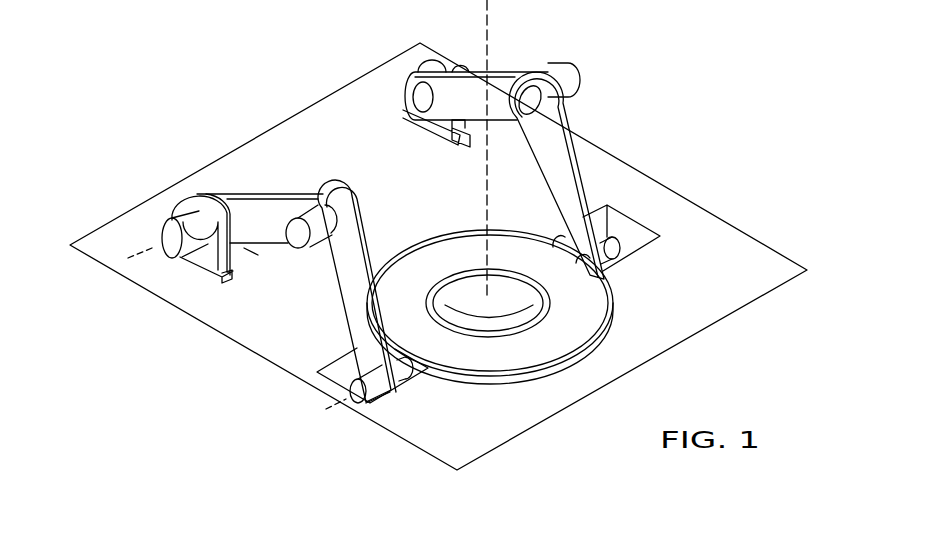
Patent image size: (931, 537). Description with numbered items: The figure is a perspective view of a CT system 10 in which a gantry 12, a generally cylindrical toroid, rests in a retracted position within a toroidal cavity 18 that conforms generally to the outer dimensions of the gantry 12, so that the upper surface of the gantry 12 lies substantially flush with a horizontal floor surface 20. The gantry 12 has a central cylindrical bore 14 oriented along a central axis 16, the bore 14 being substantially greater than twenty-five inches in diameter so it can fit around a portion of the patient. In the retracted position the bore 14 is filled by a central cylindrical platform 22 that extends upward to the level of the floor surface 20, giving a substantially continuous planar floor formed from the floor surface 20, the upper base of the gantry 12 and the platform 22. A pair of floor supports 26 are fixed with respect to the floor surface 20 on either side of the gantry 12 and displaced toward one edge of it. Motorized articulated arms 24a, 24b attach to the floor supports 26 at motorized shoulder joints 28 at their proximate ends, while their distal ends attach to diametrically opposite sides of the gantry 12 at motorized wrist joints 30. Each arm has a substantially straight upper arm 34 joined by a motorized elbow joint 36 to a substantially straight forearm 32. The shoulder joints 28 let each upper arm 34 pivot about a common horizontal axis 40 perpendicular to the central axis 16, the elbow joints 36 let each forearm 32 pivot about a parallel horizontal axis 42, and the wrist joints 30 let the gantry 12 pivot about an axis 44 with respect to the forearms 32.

The CT system 10 is at (679, 76).
The gantry 12 is at (539, 336).
The central cylindrical bore 14 is at (513, 317).
The central axis 16 is at (486, 22).
The toroidal cavity 18 is at (614, 342).
The horizontal floor surface 20 is at (757, 267).
The central cylindrical platform 22 is at (468, 308).
The motorized articulated arm 24a is at (544, 44).
The motorized articulated arm 24b is at (224, 252).
The floor support 26 is at (447, 130).
The motorized shoulder joint 28 is at (207, 255).
The motorized wrist joint 30 is at (484, 319).
The forearm 32 is at (347, 260).
The upper arm 34 is at (245, 217).
The motorized elbow joint 36 is at (290, 209).
The horizontal axis 40 is at (150, 252).
The horizontal axis 42 is at (253, 258).
The axis 44 is at (323, 413).